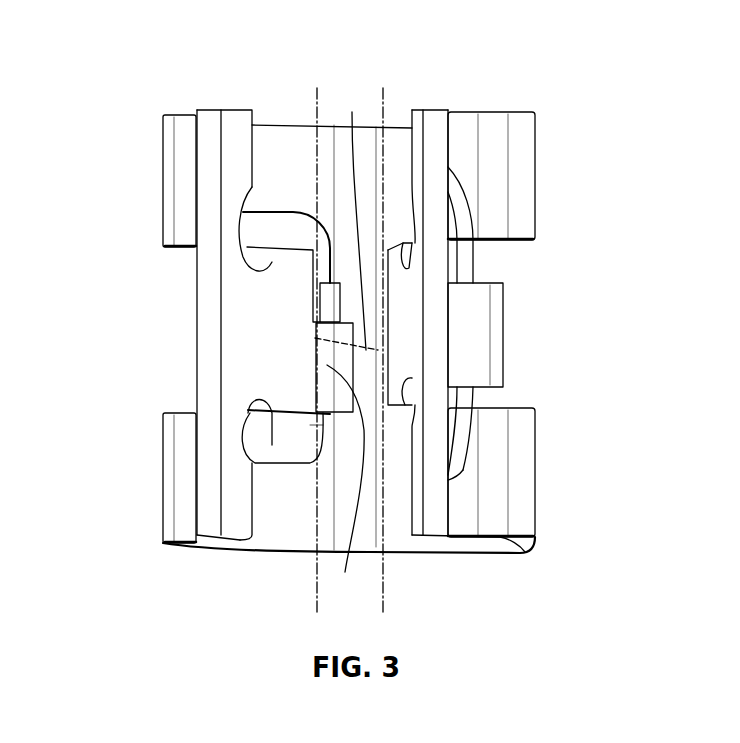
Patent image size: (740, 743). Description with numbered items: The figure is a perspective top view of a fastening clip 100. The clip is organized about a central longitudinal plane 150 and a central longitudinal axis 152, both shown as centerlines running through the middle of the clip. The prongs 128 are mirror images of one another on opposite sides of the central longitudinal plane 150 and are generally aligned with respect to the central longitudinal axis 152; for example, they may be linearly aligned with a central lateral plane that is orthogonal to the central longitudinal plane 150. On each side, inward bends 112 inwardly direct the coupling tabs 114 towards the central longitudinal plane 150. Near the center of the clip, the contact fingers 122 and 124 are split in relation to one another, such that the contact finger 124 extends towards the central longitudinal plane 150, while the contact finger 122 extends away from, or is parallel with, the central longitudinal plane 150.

The fastening clip 100 is at (158, 51).
The inward bends 112 is at (183, 160).
The coupling tabs 114 is at (212, 318).
The contact finger 122 is at (313, 290).
The contact finger 124 is at (346, 486).
The prongs 128 is at (498, 330).
The central longitudinal plane 150 is at (316, 90).
The central longitudinal axis 152 is at (356, 345).